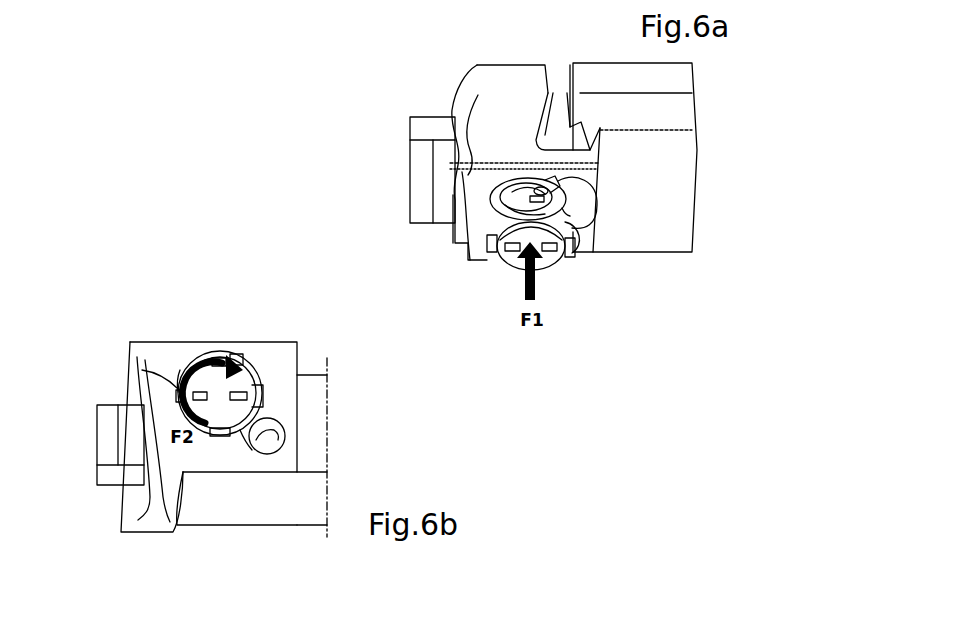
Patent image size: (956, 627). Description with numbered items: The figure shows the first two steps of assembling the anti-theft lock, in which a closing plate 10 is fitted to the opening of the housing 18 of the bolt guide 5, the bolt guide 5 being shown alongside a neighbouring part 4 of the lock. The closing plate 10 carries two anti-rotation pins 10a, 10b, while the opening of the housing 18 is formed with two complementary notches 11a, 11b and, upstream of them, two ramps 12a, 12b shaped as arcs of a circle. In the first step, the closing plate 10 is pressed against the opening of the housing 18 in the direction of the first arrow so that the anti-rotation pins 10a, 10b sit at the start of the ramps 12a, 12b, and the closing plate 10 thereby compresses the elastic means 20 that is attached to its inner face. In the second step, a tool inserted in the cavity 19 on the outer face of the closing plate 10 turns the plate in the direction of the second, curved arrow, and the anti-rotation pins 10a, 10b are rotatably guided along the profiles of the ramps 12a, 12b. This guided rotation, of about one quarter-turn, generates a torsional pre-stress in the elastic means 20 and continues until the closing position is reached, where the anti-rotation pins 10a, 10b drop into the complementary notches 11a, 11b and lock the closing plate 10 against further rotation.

In FIG. 6A, the mounting bracket 4 is at (423, 177).
In FIG. 6B, the mounting bracket 4 is at (108, 435).
In FIG. 6A, the bolt guide 5 is at (497, 63).
In FIG. 6B, the bolt guide 5 is at (240, 355).
In FIG. 6A, the closing plate 10 is at (547, 258).
In FIG. 6B, the closing plate 10 is at (257, 370).
In FIG. 6A, the anti-rotation pin 10a is at (487, 256).
In FIG. 6B, the anti-rotation pin 10a is at (176, 380).
In FIG. 6A, the anti-rotation pin 10b is at (570, 262).
In FIG. 6B, the anti-rotation pin 10b is at (262, 388).
In FIG. 6B, the notch 11a is at (225, 353).
In FIG. 6B, the notch 11b is at (212, 436).
In FIG. 6A, the ramp 12a is at (447, 203).
In FIG. 6B, the ramp 12a is at (192, 362).
In FIG. 6A, the ramp 12b is at (598, 217).
In FIG. 6B, the ramp 12b is at (247, 450).
In FIG. 6A, the housing 18 is at (604, 184).
In FIG. 6B, the cavity 19 is at (272, 416).
In FIG. 6A, the elastic means 20 is at (503, 170).